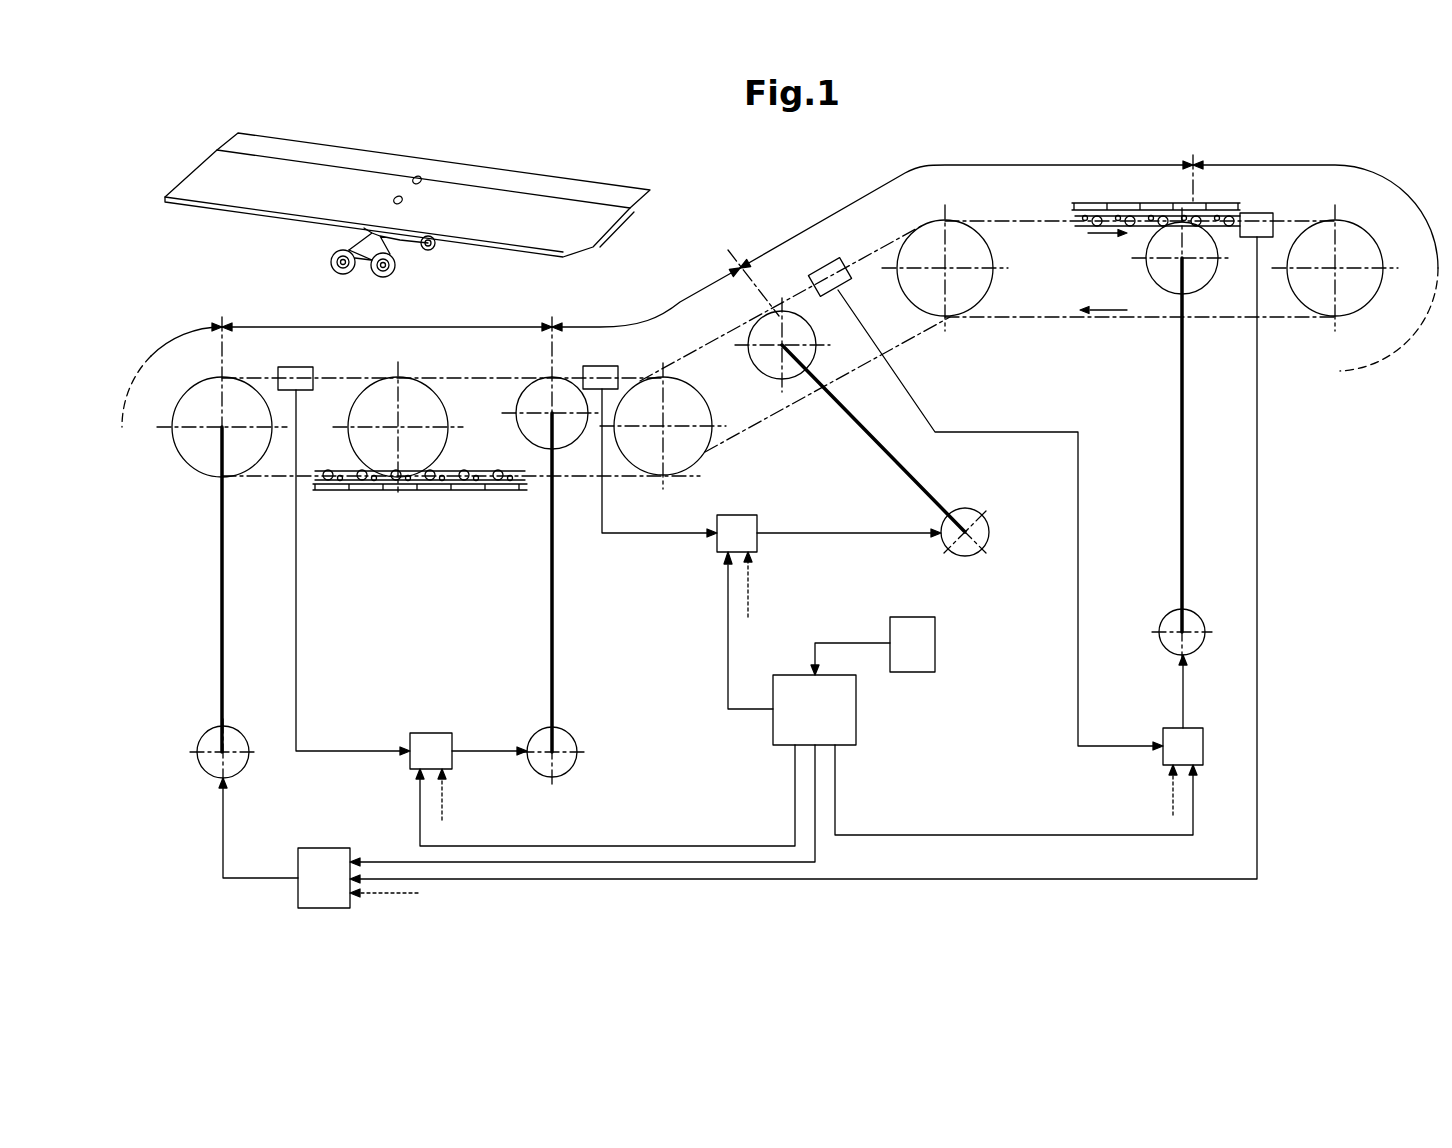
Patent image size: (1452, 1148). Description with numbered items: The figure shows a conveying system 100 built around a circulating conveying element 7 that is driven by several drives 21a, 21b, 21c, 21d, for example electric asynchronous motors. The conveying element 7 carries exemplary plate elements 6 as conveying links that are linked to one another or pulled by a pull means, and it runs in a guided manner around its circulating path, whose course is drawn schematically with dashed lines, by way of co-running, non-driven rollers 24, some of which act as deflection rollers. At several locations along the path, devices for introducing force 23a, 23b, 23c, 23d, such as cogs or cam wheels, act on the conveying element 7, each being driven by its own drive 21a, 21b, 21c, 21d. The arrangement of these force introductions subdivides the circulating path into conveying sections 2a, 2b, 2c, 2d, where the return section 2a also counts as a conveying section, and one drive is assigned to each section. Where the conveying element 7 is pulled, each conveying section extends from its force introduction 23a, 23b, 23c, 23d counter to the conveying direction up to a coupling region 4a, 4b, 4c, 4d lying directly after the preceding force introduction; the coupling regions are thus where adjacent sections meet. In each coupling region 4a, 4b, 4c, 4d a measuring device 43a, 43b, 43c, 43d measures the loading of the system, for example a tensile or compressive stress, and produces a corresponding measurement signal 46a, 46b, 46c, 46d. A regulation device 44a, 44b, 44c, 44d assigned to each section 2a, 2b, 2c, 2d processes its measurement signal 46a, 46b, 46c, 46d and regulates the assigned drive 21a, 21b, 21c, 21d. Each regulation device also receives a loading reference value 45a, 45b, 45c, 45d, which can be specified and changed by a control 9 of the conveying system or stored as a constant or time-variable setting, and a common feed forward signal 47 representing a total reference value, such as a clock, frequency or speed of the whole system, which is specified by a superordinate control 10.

The conveying system 100 is at (748, 193).
The plate elements 6 is at (331, 152).
The conveying element 7 is at (472, 378).
The rollers 24 is at (407, 383).
The return section 2a is at (188, 354).
The conveying section 2b is at (430, 327).
The conveying section 2c is at (668, 317).
The conveying section 2d is at (938, 167).
The coupling region 4a is at (1271, 246).
The coupling region 4b is at (304, 360).
The coupling region 4c is at (641, 360).
The coupling region 4d is at (831, 249).
The measuring device 43a is at (1253, 240).
The measuring device 43b is at (293, 372).
The measuring device 43c is at (598, 372).
The measuring device 43d is at (826, 275).
The force introduction 23a is at (205, 458).
The force introduction 23b is at (525, 425).
The force introduction 23c is at (765, 366).
The force introduction 23d is at (1153, 268).
The drive 21a is at (207, 760).
The drive 21b is at (570, 735).
The drive 21c is at (970, 513).
The drive 21d is at (1170, 620).
The regulation device 44a is at (318, 852).
The regulation device 44b is at (418, 735).
The regulation device 44c is at (750, 520).
The regulation device 44d is at (1168, 735).
The reference value 45a is at (400, 860).
The reference value 45b is at (610, 842).
The reference value 45c is at (727, 603).
The reference value 45d is at (1195, 797).
The measurement signal 46a is at (1260, 500).
The measurement signal 46b is at (300, 580).
The measurement signal 46c is at (660, 535).
The measurement signal 46d is at (1080, 523).
The feed forward signal 47 is at (836, 640).
The control 9 is at (850, 725).
The superordinate control 10 is at (928, 643).